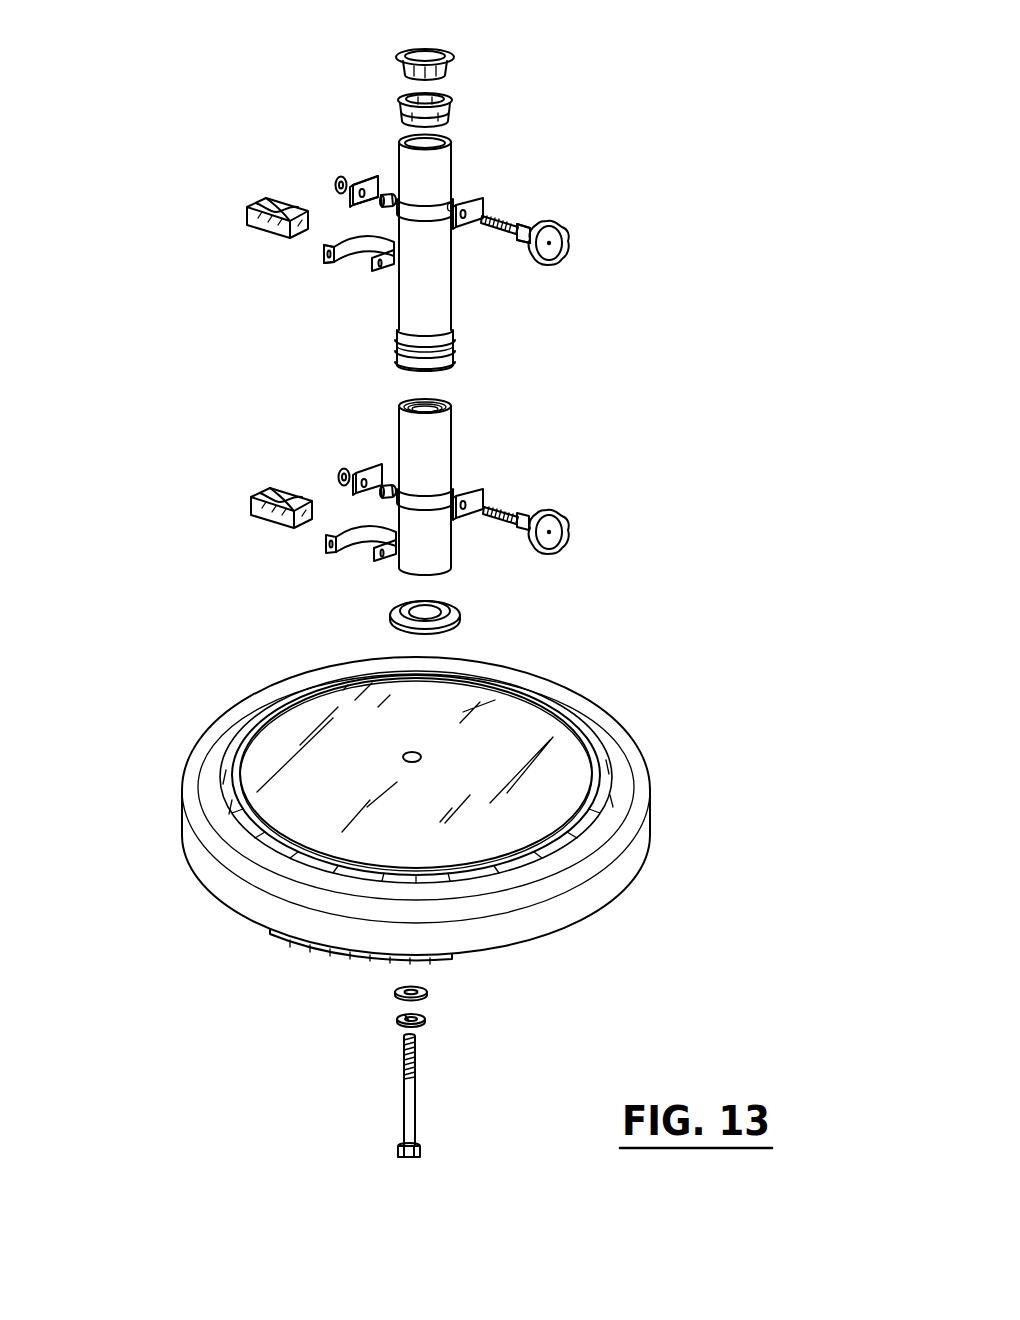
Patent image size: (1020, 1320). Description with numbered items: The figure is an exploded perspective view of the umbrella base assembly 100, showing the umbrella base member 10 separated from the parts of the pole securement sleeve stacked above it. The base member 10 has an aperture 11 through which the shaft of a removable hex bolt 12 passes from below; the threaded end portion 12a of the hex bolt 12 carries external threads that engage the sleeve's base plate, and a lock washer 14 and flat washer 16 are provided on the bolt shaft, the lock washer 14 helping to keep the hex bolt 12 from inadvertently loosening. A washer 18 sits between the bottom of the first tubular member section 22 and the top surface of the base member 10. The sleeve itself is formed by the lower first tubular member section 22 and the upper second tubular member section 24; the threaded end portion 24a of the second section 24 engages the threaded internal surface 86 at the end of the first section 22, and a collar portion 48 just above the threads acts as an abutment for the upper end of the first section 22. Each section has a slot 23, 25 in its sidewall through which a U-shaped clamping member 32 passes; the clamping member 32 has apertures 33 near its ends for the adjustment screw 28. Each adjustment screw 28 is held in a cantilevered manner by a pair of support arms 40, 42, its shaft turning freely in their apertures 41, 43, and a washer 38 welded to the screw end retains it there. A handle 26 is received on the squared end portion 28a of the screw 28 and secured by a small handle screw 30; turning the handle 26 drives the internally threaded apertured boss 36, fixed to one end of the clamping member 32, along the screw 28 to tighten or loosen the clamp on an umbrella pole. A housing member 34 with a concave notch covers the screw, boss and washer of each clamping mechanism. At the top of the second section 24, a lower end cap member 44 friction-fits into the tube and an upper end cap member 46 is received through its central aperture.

The umbrella base member 10 is at (607, 848).
The aperture 11 is at (418, 757).
The hex bolt 12 is at (410, 1100).
The threaded end portion 12a is at (415, 1045).
The lock washer 14 is at (397, 1020).
The flat washer 16 is at (393, 992).
The washer 18 is at (405, 610).
The first tubular member section 22 is at (443, 468).
The slot 23 is at (420, 497).
The second tubular member section 24 is at (437, 310).
The threaded end portion 24a is at (447, 362).
The slot 25 is at (425, 208).
The handle 26 is at (567, 236).
The adjustment screw 28 is at (505, 226).
The squared end portion 28a is at (523, 240).
The handle screw 30 is at (575, 249).
The U-shaped clamping member 32 is at (380, 260).
The apertures 33 is at (338, 255).
The housing member 34 is at (250, 215).
The apertured boss 36 is at (388, 195).
The washer 38 is at (335, 188).
The support arm 40 is at (478, 207).
The aperture 41 is at (456, 200).
The support arm 42 is at (357, 188).
The aperture 43 is at (352, 198).
The lower end cap member 44 is at (398, 100).
The upper end cap member 46 is at (452, 52).
The collar portion 48 is at (400, 346).
The threaded internal surface 86 is at (427, 403).
The umbrella base assembly 100 is at (218, 934).